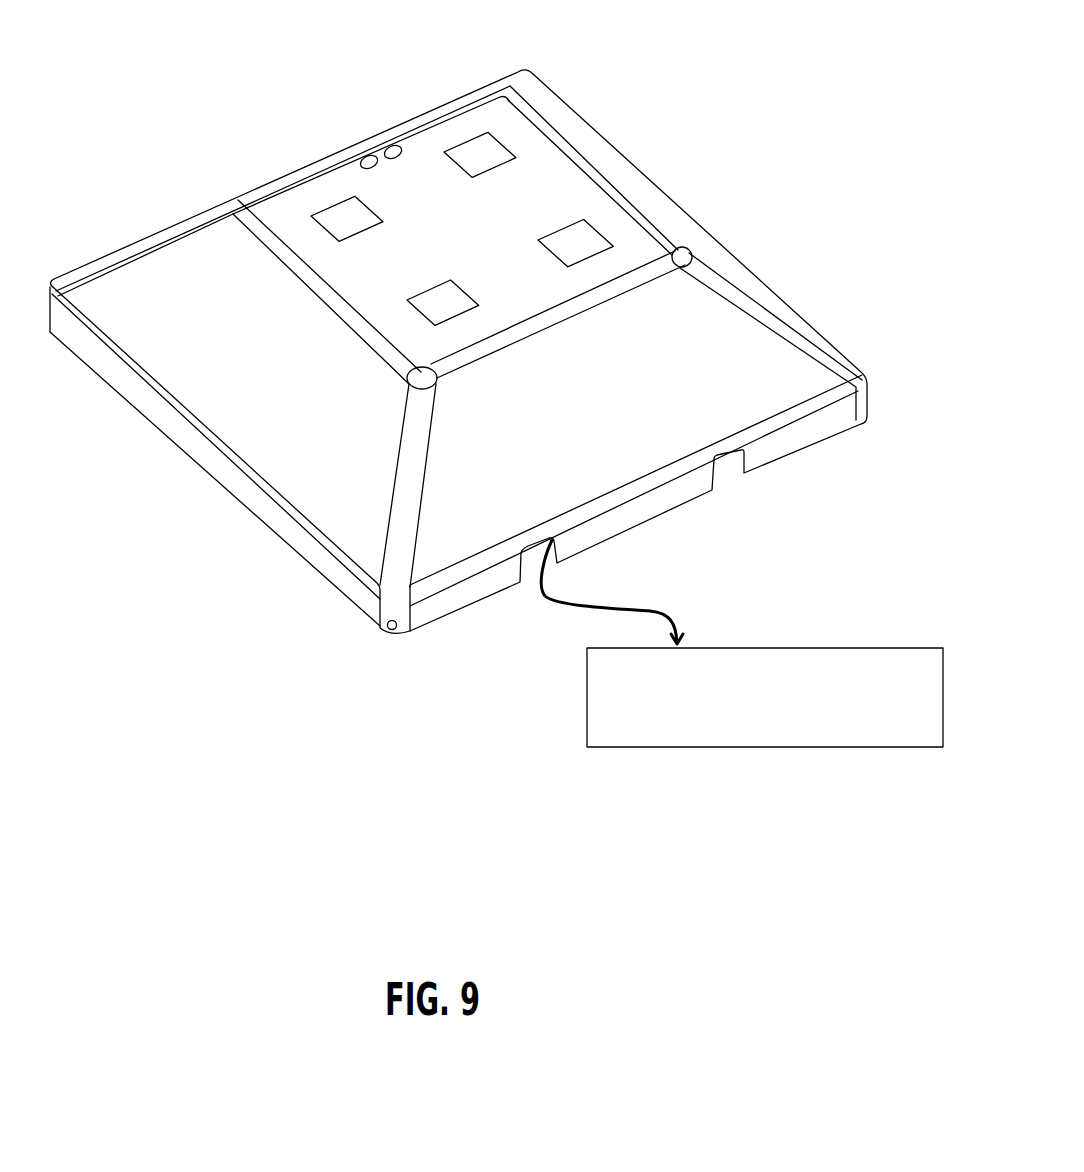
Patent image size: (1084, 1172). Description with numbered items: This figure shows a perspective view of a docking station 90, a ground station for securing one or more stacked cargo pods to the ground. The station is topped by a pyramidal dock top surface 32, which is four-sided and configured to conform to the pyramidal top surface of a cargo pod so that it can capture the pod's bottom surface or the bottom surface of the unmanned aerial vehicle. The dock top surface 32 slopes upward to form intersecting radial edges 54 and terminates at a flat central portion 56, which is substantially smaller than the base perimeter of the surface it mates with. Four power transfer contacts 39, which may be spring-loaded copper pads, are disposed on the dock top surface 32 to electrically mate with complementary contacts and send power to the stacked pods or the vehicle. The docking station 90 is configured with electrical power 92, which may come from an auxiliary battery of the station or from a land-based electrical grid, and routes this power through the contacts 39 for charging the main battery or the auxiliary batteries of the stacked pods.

The docking station 90 is at (230, 500).
The radial edges 54 is at (123, 247).
The flat central portion 56 is at (420, 138).
The dock top surface 32 is at (770, 367).
The power transfer contacts 39 is at (353, 220).
The electrical power 92 is at (654, 765).